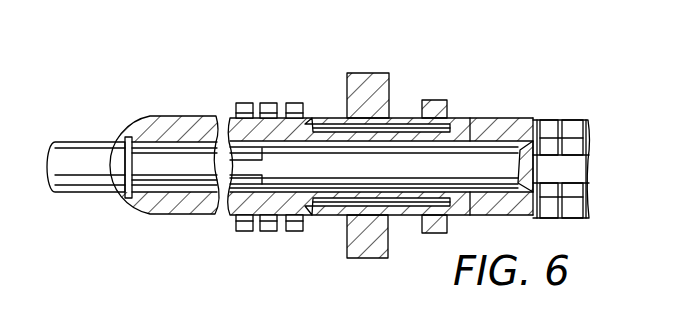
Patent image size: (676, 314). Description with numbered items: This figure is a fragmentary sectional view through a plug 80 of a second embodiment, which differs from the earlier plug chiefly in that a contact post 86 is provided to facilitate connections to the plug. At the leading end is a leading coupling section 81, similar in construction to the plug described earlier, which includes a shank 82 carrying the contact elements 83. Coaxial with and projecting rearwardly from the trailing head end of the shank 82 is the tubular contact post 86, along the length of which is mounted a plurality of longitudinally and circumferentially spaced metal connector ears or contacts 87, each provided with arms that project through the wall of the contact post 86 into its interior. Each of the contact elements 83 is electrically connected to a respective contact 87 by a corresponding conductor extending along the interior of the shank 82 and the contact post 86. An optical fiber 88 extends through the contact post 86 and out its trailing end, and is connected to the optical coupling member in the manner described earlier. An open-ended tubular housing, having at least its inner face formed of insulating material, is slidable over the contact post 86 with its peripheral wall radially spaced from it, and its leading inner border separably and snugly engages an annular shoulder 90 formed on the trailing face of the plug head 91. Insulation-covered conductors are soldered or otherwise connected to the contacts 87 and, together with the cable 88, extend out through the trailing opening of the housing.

The plug 80 is at (321, 165).
The leading coupling section 81 is at (597, 118).
The shank 82 is at (577, 172).
The contact elements 83 is at (547, 123).
The contact post 86 is at (228, 205).
The contacts 87 is at (293, 102).
The optical fiber 88 is at (187, 160).
The annular shoulder 90 is at (328, 118).
The plug head 91 is at (390, 83).